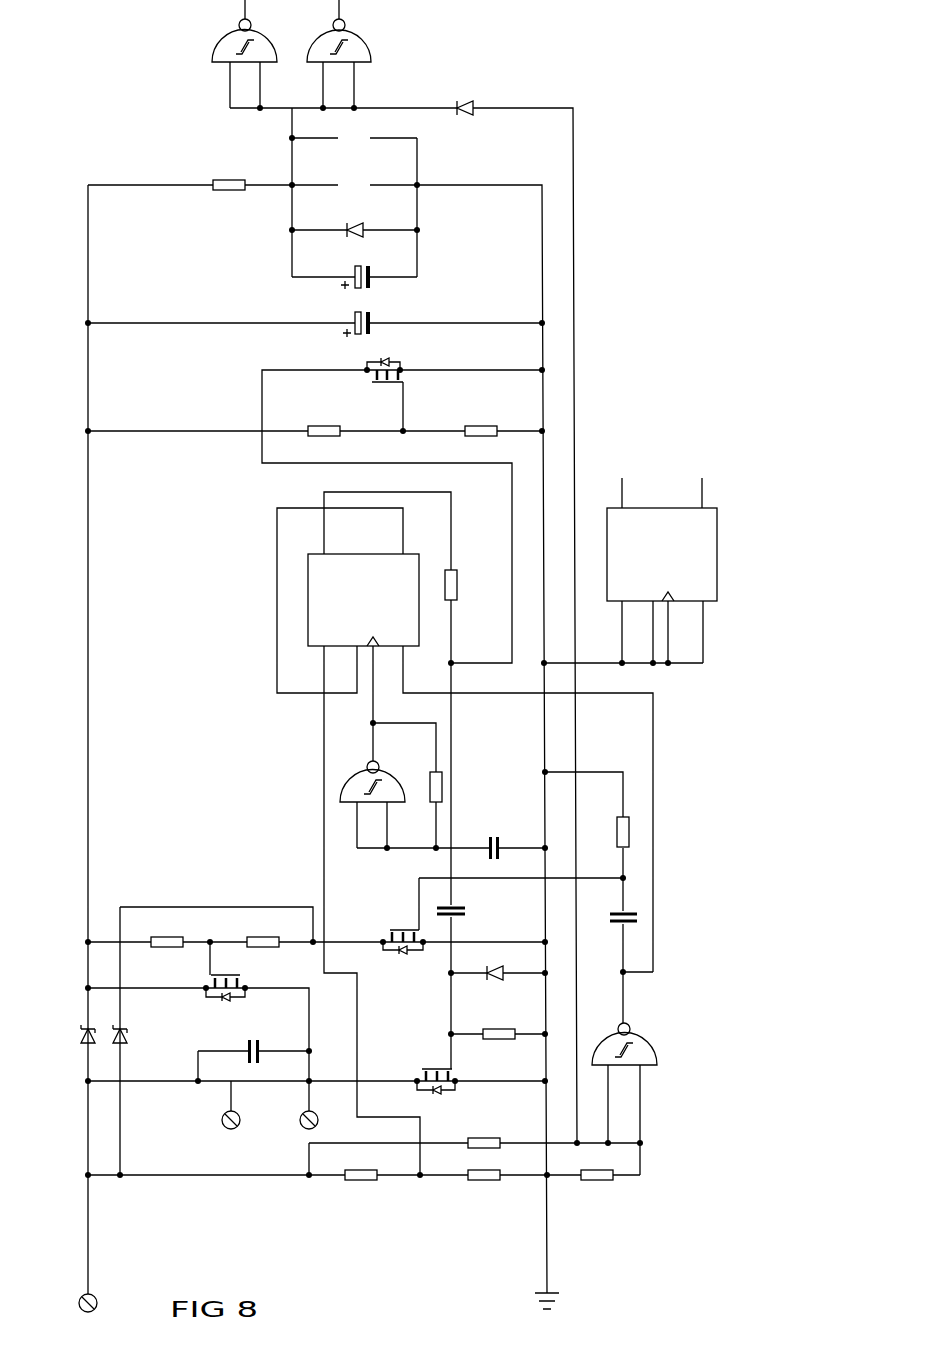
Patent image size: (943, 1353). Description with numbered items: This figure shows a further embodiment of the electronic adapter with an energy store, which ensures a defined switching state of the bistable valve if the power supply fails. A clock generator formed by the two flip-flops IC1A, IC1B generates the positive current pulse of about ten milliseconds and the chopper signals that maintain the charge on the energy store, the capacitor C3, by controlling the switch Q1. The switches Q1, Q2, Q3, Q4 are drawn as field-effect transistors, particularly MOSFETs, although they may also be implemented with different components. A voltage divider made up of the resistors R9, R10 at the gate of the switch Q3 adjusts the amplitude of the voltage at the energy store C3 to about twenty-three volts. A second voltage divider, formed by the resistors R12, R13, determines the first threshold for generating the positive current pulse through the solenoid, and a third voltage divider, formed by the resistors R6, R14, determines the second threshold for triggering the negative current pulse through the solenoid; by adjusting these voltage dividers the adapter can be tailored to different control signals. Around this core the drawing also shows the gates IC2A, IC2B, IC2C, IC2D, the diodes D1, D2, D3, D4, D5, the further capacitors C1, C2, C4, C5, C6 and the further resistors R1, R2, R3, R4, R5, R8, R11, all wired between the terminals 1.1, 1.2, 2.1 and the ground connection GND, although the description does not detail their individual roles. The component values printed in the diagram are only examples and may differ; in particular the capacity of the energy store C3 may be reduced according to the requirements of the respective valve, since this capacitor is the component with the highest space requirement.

The Schmitt trigger NAND gate IC2C is at (237, 31).
The Schmitt trigger NAND gate IC2D is at (347, 31).
The Schmitt trigger NAND gate IC2B is at (377, 782).
The Schmitt trigger NAND gate IC2A is at (646, 1047).
The flip-flop IC1A is at (363, 603).
The flip-flop IC1B is at (663, 557).
The diode D1 is at (356, 217).
The zener diode D2 is at (76, 1034).
The zener diode D3 is at (136, 1034).
The diode D4 is at (498, 987).
The diode D5 is at (464, 94).
The capacitor C1 100n C1 is at (467, 911).
The capacitor C2 4,7n C2 is at (503, 843).
The energy store C3 is at (376, 317).
The capacitor C4 47n C4 is at (260, 1045).
The capacitor C5 47n C5 is at (614, 919).
The electrolytic capacitor C6 22µ C6 is at (369, 271).
The resistor R1 4,7k R1 is at (471, 587).
The resistor R2 100k R2 is at (235, 188).
The resistor R3 220k R3 is at (417, 800).
The resistor R4 220k R4 is at (503, 1048).
The resistor R5 47k R5 is at (263, 942).
The resistor R6 is at (602, 1188).
The resistor R8 220k R8 is at (604, 833).
The resistor R9 is at (479, 434).
The resistor R10 is at (328, 434).
The resistor R11 47k R11 is at (167, 942).
The resistor R12 is at (366, 1176).
The resistor R13 is at (486, 1188).
The resistor R14 is at (486, 1130).
The switch Q1 is at (436, 1068).
The switch Q2 is at (403, 955).
The switch Q3 is at (390, 359).
The switch Q4 is at (225, 1001).
The terminal 1.1 is at (292, 1124).
The terminal 1.2 is at (211, 1124).
The terminal 2.1 is at (71, 1305).
The ground terminal GND is at (576, 1310).